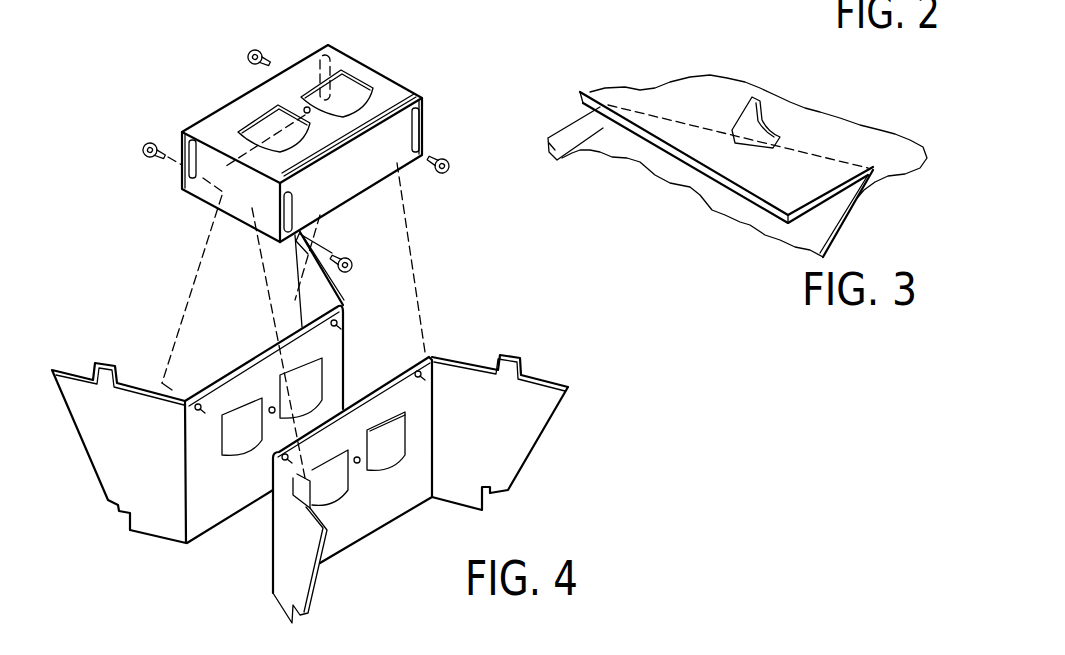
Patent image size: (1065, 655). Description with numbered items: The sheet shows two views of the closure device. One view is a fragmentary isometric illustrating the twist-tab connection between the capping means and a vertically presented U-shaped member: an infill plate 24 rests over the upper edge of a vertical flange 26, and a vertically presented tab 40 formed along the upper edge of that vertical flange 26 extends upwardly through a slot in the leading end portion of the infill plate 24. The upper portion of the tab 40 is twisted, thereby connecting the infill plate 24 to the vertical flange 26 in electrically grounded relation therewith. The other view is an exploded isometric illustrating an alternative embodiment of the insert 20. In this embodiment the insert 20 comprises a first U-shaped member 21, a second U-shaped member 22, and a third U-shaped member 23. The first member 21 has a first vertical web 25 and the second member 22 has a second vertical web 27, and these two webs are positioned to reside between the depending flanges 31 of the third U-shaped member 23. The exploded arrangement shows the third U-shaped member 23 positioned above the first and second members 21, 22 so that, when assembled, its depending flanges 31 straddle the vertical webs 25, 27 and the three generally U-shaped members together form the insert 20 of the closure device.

In FIG. 4, the insert 20 is at (291, 137).
In FIG. 4, the third U-shaped member 23 is at (355, 54).
In FIG. 4, the depending flanges 31 is at (180, 166).
In FIG. 4, the second U-shaped member 22 is at (98, 475).
In FIG. 4, the second vertical web 27 is at (217, 517).
In FIG. 4, the first vertical web 25 is at (367, 527).
In FIG. 4, the first U-shaped member 21 is at (536, 446).
In FIG. 3, the infill plate 24 is at (830, 113).
In FIG. 3, the vertical flange 26 is at (710, 187).
In FIG. 3, the vertically presented tab 40 is at (757, 102).